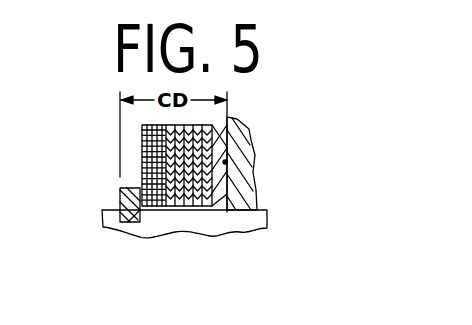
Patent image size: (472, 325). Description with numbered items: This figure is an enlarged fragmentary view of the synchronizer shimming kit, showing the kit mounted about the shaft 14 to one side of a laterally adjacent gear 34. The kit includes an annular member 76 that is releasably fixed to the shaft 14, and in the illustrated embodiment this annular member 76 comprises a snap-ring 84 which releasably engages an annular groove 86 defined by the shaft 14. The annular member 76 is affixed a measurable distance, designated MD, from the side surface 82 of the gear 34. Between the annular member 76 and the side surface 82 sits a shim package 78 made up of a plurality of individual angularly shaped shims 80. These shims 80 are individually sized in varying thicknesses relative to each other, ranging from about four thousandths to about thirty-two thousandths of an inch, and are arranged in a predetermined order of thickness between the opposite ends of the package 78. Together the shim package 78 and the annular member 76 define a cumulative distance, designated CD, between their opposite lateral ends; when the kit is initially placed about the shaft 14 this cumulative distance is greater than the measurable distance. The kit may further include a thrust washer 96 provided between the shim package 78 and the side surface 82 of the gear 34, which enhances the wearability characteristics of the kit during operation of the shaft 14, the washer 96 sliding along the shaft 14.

The shaft 14 is at (265, 218).
The gear 34 is at (240, 140).
The annular member 76 is at (118, 194).
The shim package 78 is at (169, 220).
The shims 80 is at (202, 206).
The side surface 82 is at (227, 162).
The snap-ring 84 is at (121, 219).
The annular groove 86 is at (138, 222).
The thrust washer 96 is at (213, 206).